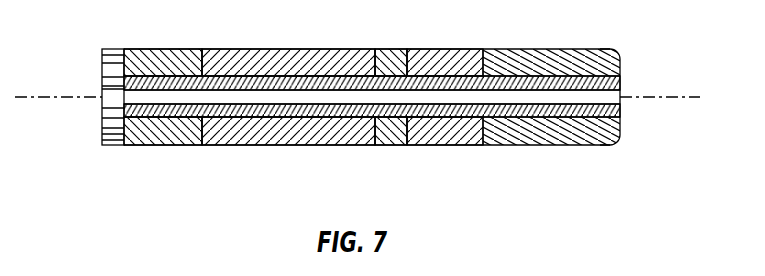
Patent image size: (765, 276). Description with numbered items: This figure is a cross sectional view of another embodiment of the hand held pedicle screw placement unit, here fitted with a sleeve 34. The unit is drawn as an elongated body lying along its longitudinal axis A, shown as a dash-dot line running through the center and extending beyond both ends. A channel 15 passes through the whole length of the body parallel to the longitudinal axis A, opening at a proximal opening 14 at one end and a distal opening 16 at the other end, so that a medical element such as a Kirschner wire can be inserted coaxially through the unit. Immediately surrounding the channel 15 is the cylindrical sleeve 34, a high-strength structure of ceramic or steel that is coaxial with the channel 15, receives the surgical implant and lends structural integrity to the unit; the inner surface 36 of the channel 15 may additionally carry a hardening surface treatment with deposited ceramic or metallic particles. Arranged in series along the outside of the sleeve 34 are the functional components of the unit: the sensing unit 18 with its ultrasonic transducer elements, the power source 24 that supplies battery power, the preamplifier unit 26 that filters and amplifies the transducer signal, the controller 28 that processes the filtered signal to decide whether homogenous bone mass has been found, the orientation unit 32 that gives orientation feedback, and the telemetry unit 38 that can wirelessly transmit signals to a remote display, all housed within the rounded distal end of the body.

The proximal opening 14 is at (620, 92).
The channel 15 is at (462, 97).
The distal opening 16 is at (103, 92).
The sensing unit 18 is at (112, 49).
The power source 24 is at (290, 49).
The preamplifier unit 26 is at (178, 49).
The controller 28 is at (456, 49).
The orientation unit 32 is at (392, 49).
The sleeve 34 is at (560, 78).
The inner surface 36 is at (302, 100).
The telemetry unit 38 is at (590, 50).
The longitudinal axis A is at (702, 96).